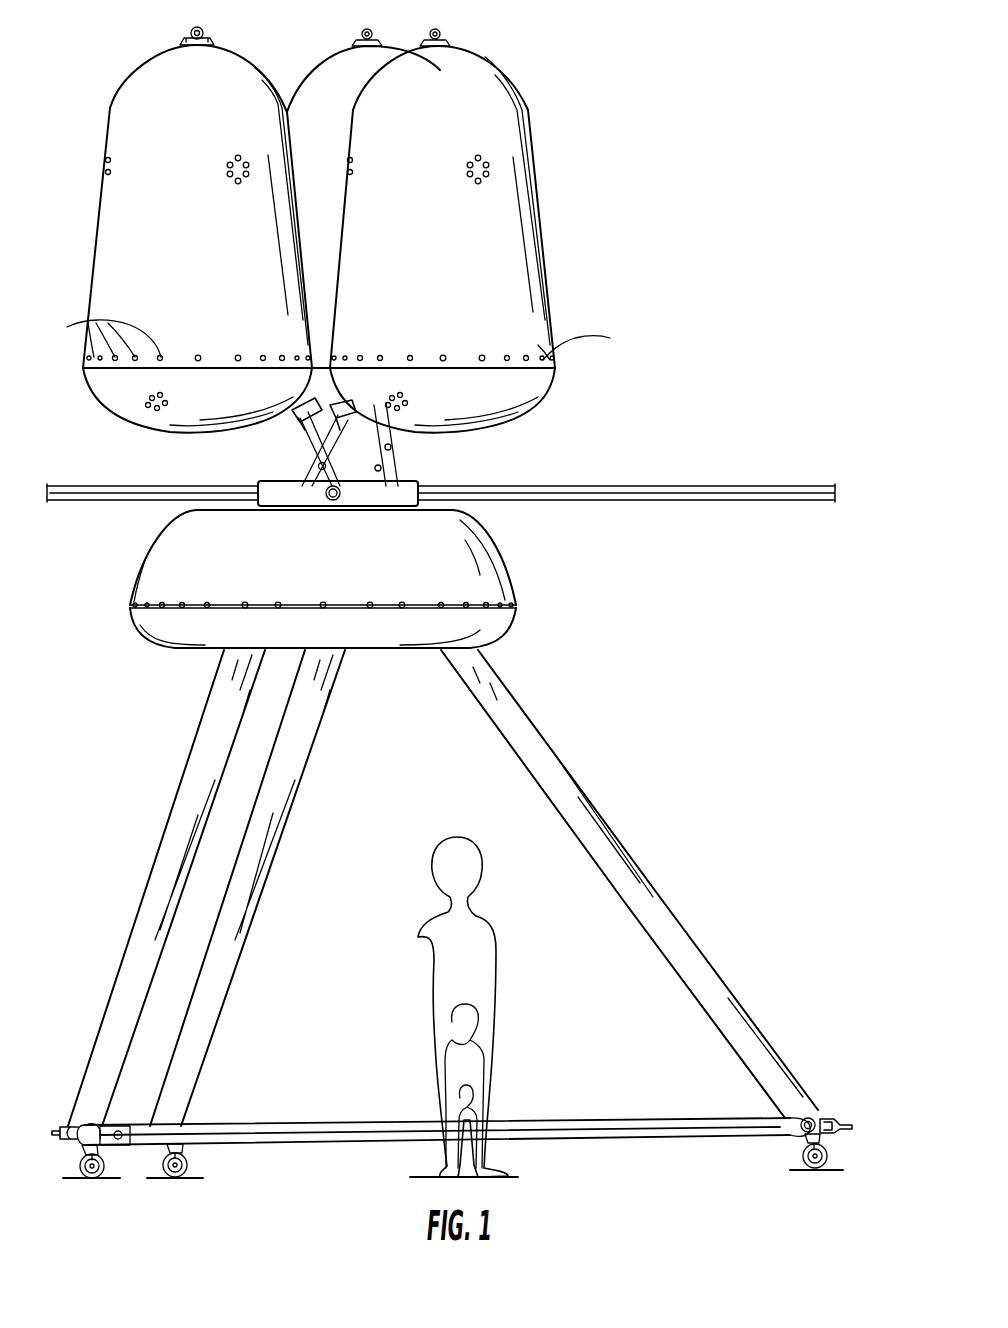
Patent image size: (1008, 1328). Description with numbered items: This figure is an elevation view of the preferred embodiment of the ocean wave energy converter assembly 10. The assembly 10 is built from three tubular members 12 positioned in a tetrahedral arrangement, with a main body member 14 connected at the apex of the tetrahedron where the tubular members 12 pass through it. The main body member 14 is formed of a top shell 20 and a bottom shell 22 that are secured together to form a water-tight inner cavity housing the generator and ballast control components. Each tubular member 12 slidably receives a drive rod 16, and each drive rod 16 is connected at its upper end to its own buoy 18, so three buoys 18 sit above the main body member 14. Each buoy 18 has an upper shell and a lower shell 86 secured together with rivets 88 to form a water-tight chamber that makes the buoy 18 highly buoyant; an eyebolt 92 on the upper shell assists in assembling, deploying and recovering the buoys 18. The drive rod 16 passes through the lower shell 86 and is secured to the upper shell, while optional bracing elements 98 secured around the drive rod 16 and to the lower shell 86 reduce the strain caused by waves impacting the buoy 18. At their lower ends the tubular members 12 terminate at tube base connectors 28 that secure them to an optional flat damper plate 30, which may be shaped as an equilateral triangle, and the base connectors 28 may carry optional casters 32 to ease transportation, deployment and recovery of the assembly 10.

The ocean wave energy converter assembly 10 is at (652, 101).
The tubular members 12 is at (198, 748).
The main body member 14 is at (331, 578).
The drive rod 16 is at (300, 462).
The buoy 18 is at (114, 124).
The top shell 20 is at (500, 546).
The bottom shell 22 is at (520, 644).
The tube base connectors 28 is at (60, 1131).
The damper plate 30 is at (598, 1122).
The casters 32 is at (104, 1170).
The lower shell 86 is at (118, 422).
The rivets 88 is at (72, 328).
The eyebolt 92 is at (185, 40).
The bracing elements 98 is at (292, 430).